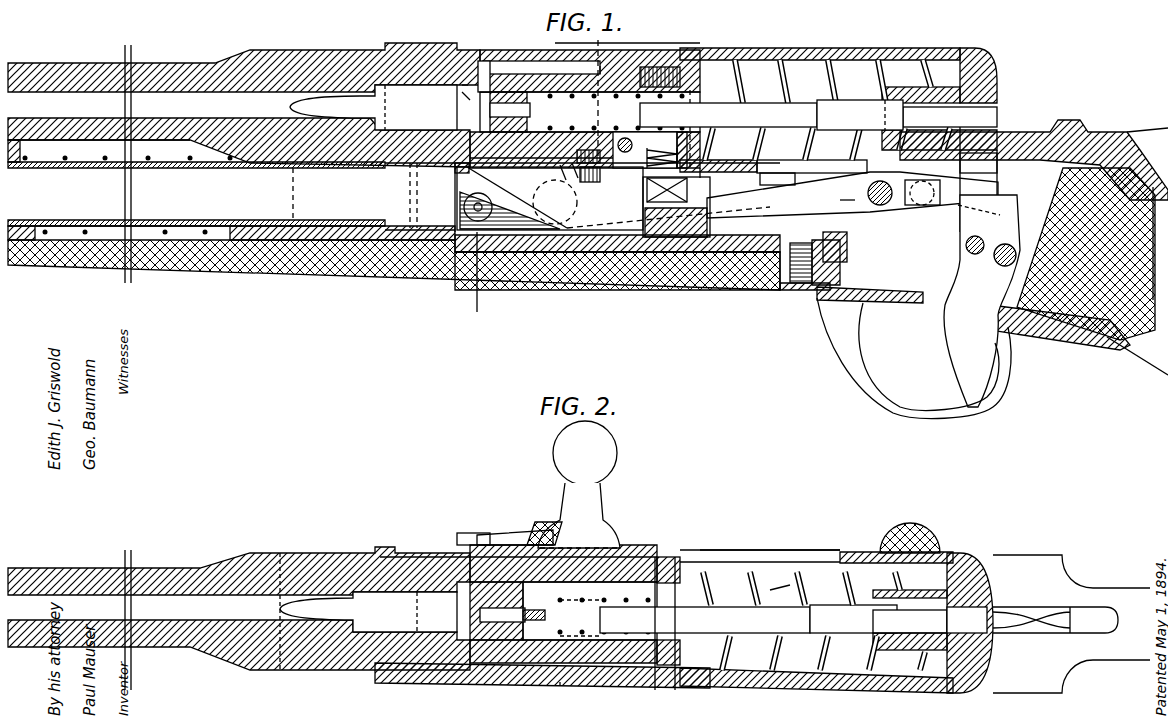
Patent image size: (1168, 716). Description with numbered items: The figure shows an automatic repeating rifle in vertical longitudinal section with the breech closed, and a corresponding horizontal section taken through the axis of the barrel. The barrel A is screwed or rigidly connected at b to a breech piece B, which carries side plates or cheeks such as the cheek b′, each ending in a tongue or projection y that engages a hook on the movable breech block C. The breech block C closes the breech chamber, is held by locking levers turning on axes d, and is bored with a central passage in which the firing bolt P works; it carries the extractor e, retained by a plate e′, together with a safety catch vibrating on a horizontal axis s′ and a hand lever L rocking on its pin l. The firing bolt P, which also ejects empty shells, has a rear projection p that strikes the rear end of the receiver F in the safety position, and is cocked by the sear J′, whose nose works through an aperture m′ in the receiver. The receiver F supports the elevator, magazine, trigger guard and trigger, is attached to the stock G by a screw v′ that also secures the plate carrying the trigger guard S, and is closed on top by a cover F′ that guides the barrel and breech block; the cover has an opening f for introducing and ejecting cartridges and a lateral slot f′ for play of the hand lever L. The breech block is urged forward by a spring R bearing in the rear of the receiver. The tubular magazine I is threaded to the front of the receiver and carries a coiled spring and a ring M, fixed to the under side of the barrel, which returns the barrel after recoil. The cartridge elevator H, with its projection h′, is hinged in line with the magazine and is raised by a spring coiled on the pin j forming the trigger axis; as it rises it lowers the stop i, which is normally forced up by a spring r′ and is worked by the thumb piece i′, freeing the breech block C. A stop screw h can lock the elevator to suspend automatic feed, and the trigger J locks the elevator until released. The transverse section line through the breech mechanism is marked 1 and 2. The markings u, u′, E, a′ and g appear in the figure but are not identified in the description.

In FIG. 1, the barrel A is at (244, 105).
In FIG. 2, the barrel A is at (239, 608).
In FIG. 1, the breech piece B is at (578, 60).
In FIG. 2, the breech piece B is at (542, 616).
In FIG. 1, the barrel connection b is at (373, 107).
In FIG. 2, the barrel connection b is at (368, 611).
In FIG. 1, the movable breech block C is at (590, 130).
In FIG. 2, the movable breech block C is at (470, 605).
In FIG. 1, the cover opening f is at (539, 66).
In FIG. 1, the extractor e is at (462, 90).
In FIG. 1, the extractor plate e′ is at (583, 58).
In FIG. 1, the section line 1 is at (603, 99).
In FIG. 1, the section line 2 is at (477, 280).
In FIG. 1, the bolt spring u is at (616, 112).
In FIG. 2, the bolt spring u is at (612, 616).
In FIG. 1, the safety catch axis s′ is at (594, 138).
In FIG. 1, the hand lever pin l is at (568, 184).
In FIG. 1, the locking lever axes d is at (583, 182).
In FIG. 2, the locking lever axes d is at (538, 611).
In FIG. 1, the elevator projection h′ is at (455, 190).
In FIG. 2, the elevator projection h′ is at (520, 532).
In FIG. 1, the cartridge elevator H is at (613, 198).
In FIG. 1, the sear lever E is at (777, 203).
In FIG. 1, the stop spring r′ is at (816, 197).
In FIG. 1, the stop i is at (901, 184).
In FIG. 1, the lever spring u′ is at (851, 190).
In FIG. 1, the trigger J is at (982, 301).
In FIG. 1, the sear J′ is at (988, 162).
In FIG. 2, the sear J′ is at (967, 620).
In FIG. 1, the trigger pin j is at (981, 208).
In FIG. 1, the screw v′ is at (810, 273).
In FIG. 1, the receiver F is at (982, 75).
In FIG. 2, the receiver F is at (939, 623).
In FIG. 1, the cover F′ is at (792, 100).
In FIG. 2, the cover F′ is at (805, 629).
In FIG. 1, the breech block spring R is at (827, 110).
In FIG. 2, the breech block spring R is at (814, 620).
In FIG. 1, the firing bolt P is at (818, 115).
In FIG. 2, the firing bolt P is at (705, 620).
In FIG. 2, the projection p is at (910, 621).
In FIG. 1, the aperture m′ is at (1040, 130).
In FIG. 1, the ring M is at (231, 190).
In FIG. 1, the magazine I is at (355, 195).
In FIG. 1, the stock G is at (588, 271).
In FIG. 1, the trigger guard S is at (914, 358).
In FIG. 2, the hand lever L is at (579, 484).
In FIG. 2, the elevator stop h is at (466, 532).
In FIG. 2, the bolt bore a′ is at (580, 618).
In FIG. 2, the side plate b′ is at (580, 552).
In FIG. 2, the locking groove g is at (651, 623).
In FIG. 2, the tongue y is at (671, 622).
In FIG. 2, the lateral slot f′ is at (770, 543).
In FIG. 2, the thumb piece i′ is at (910, 532).